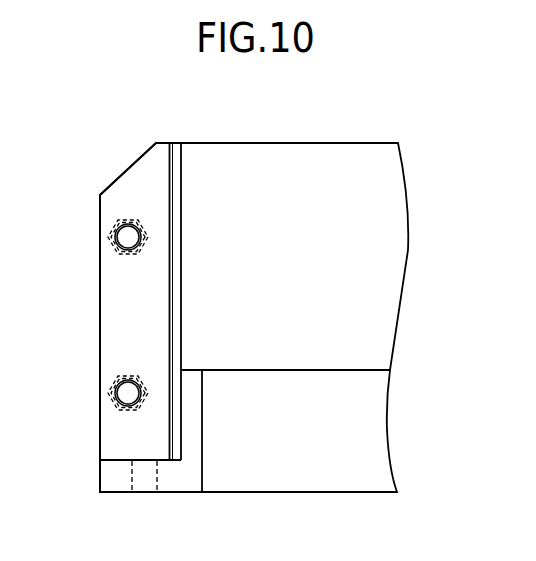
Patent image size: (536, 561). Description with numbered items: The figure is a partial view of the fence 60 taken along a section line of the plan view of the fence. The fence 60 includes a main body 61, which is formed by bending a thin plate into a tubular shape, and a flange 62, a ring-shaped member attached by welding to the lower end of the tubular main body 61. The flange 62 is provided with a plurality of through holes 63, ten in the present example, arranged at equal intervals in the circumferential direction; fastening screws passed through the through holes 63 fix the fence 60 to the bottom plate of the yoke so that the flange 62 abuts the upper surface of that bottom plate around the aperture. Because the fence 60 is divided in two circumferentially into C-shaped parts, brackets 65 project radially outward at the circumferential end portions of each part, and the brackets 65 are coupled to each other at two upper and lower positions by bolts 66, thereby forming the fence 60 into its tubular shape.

The fence 60 is at (97, 282).
The main body 61 is at (181, 327).
The flange 62 is at (114, 460).
The through holes 63 is at (132, 484).
The brackets 65 is at (100, 330).
The bolts 66 is at (115, 237).